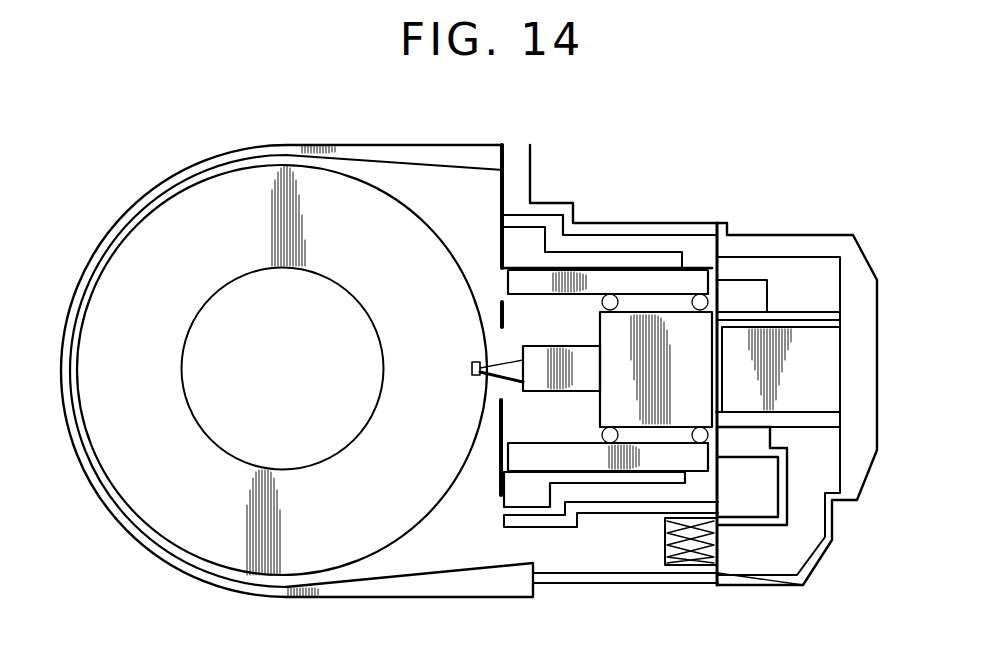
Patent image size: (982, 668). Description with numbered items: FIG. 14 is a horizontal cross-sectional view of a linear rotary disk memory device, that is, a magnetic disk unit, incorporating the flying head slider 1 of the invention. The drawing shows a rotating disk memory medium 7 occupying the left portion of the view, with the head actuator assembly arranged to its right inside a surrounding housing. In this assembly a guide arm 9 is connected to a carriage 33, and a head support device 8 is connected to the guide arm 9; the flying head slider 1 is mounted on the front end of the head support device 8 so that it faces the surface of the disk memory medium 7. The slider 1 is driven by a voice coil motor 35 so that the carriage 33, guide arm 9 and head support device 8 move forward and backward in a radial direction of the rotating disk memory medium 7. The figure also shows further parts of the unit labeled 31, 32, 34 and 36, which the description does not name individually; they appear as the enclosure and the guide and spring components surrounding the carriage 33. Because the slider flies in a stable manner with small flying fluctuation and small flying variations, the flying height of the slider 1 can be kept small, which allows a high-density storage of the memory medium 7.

The flying head slider 1 is at (472, 371).
The rotating disk memory medium 7 is at (190, 195).
The head support device 8 is at (508, 382).
The guide arm 9 is at (565, 391).
The housing 31 is at (437, 150).
The guide bar 32 is at (597, 268).
The carriage 33 is at (603, 333).
The spring 34 is at (703, 575).
The voice coil motor 35 is at (797, 310).
The cover 36 is at (643, 578).